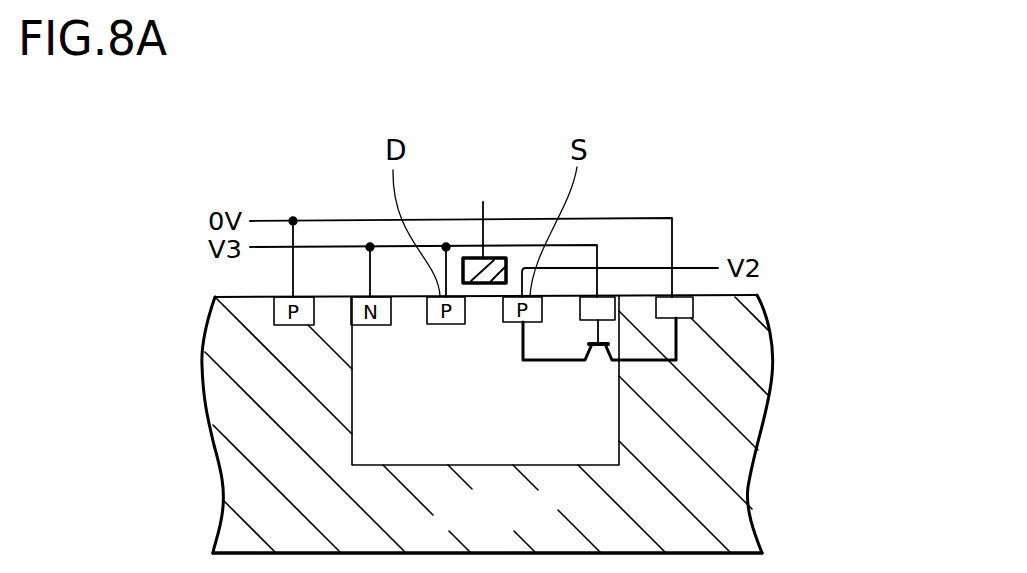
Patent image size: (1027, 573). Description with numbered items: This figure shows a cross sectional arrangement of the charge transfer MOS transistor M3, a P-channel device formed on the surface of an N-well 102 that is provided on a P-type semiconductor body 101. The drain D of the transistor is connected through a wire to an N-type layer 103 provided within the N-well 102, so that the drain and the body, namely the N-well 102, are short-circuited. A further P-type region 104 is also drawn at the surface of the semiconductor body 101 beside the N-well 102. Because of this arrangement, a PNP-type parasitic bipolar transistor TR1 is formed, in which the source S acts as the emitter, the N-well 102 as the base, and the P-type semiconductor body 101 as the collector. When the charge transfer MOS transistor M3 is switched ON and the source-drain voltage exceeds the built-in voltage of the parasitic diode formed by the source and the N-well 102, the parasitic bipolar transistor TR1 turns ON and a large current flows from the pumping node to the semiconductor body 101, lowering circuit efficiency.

The P-type semiconductor body 101 is at (705, 498).
The N-well 102 is at (617, 407).
The N-type layer 103 is at (607, 296).
The P-type diffusion region (collector contact) 104 is at (678, 296).
The charge transfer MOS transistor M3 is at (486, 184).
The parasitic bipolar transistor TR1 is at (599, 358).